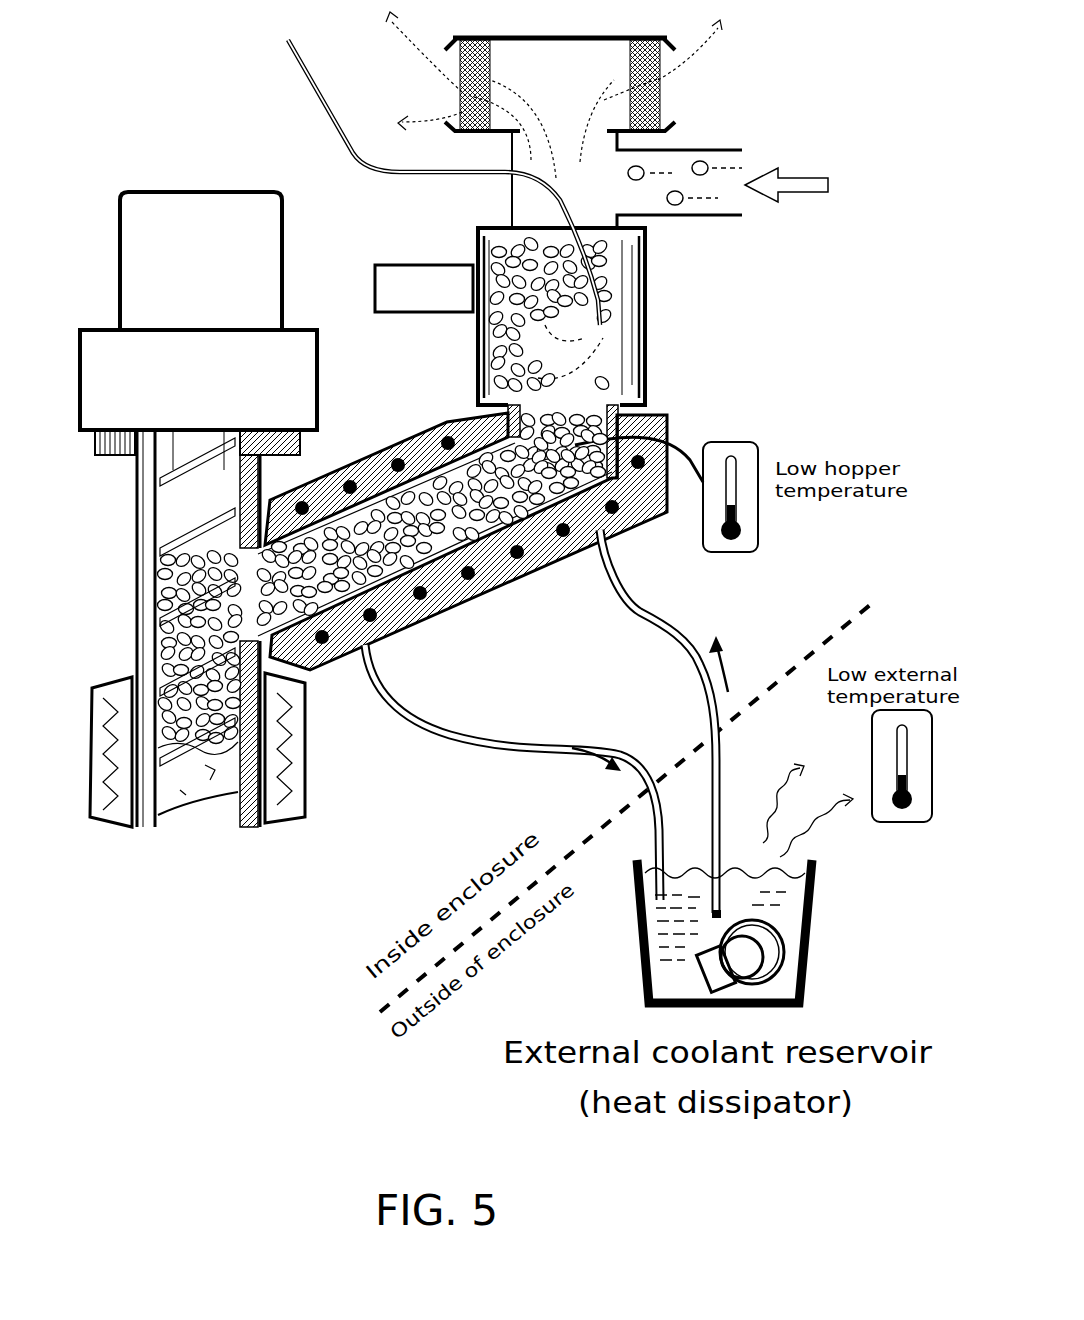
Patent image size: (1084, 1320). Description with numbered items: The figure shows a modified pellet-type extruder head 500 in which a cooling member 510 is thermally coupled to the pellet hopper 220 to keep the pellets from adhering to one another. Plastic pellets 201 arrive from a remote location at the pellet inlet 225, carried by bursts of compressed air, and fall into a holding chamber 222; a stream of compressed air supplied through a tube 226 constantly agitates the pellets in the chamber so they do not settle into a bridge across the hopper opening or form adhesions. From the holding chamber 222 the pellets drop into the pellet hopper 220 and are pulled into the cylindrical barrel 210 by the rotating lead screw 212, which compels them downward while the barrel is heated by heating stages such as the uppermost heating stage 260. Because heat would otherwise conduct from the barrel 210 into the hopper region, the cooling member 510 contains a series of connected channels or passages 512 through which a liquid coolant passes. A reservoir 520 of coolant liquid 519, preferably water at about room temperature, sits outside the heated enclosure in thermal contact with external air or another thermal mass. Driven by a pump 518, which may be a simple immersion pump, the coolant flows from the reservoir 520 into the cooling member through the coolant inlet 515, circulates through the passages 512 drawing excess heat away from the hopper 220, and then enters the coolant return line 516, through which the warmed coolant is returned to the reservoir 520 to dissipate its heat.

The modified pellet-type extruder head 500 is at (233, 1008).
The plastic pellets 201 is at (700, 150).
The cylindrical barrel 210 is at (137, 565).
The lead screw 212 is at (178, 477).
The pellet hopper 220 is at (563, 560).
The holding chamber 222 is at (647, 317).
The pellet inlet 225 is at (760, 208).
The tube 226 is at (316, 90).
The heating stage 260 is at (122, 675).
The cooling member 510 is at (425, 427).
The channels or passages 512 is at (413, 648).
The coolant inlet 515 is at (678, 613).
The coolant return line 516 is at (618, 724).
The pump 518 is at (812, 968).
The coolant liquid 519 is at (683, 977).
The reservoir 520 is at (817, 883).